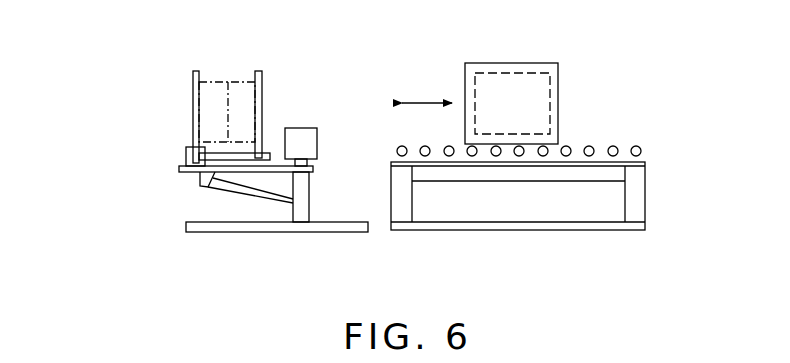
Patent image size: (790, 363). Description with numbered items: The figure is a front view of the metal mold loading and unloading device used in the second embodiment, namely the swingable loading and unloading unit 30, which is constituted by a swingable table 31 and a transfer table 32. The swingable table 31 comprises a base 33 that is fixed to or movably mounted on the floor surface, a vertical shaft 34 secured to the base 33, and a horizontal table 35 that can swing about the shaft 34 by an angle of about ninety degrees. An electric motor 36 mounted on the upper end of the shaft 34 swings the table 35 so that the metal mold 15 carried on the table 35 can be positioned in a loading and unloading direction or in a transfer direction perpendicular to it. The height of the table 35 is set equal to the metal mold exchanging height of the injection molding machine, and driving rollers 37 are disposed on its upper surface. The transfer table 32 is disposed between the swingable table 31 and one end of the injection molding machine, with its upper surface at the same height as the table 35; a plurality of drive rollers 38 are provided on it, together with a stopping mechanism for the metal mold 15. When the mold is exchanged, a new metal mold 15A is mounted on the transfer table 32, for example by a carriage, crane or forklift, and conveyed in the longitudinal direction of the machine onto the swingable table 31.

The swingable loading and unloading unit 30 is at (374, 78).
The swingable table 31 is at (178, 135).
The metal mold 15 is at (215, 80).
The driving rollers 37 is at (267, 158).
The electric motor 36 is at (307, 138).
The horizontal table 35 is at (213, 173).
The vertical shaft 34 is at (309, 192).
The base 33 is at (240, 233).
The new metal mold 15A is at (558, 63).
The drive rollers 38 is at (568, 146).
The transfer table 32 is at (639, 132).